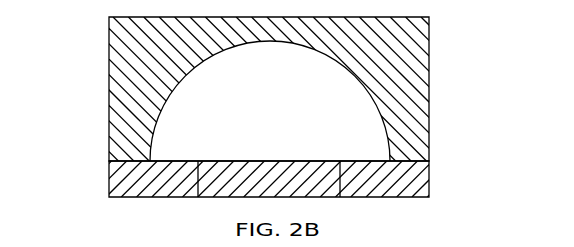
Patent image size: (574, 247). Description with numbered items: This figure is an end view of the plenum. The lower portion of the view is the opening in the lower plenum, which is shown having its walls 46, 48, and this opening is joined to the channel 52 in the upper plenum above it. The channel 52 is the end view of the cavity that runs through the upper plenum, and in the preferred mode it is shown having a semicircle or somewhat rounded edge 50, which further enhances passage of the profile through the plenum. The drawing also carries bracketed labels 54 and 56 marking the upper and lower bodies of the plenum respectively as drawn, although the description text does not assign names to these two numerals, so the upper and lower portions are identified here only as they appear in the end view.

The wall 46 is at (184, 177).
The wall 48 is at (343, 179).
The rounded edge 50 is at (390, 137).
The channel 52 is at (293, 103).
The upper layer 54 is at (287, 89).
The base layer 56 is at (273, 195).